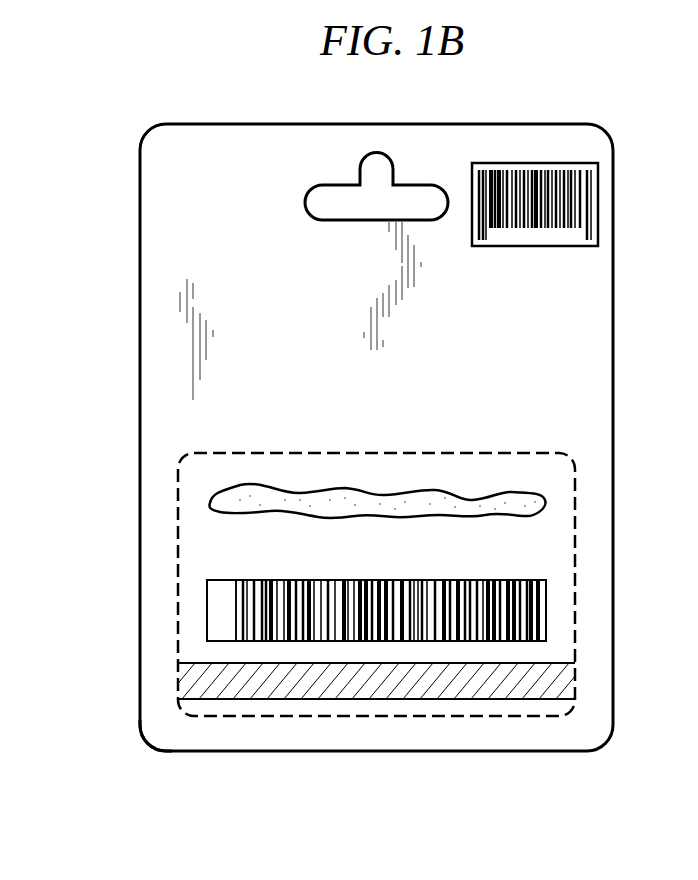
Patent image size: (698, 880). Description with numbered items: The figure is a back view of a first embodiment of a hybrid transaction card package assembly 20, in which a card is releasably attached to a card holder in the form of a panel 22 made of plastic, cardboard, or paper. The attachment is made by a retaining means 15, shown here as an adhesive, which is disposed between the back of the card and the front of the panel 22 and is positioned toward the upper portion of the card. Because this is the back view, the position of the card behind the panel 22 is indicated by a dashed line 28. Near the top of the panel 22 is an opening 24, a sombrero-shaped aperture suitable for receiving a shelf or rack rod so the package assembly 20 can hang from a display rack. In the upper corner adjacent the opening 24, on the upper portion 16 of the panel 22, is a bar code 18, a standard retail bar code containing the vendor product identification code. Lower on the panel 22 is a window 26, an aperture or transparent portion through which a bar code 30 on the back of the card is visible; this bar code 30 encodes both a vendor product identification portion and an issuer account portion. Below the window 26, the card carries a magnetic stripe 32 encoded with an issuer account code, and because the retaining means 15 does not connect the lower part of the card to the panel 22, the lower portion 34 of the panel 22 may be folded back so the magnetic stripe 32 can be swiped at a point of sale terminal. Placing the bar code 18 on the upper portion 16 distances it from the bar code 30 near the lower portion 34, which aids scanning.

The hybrid transaction card package assembly 20 is at (258, 96).
The upper portion of the panel 16 is at (613, 227).
The panel 22 is at (580, 360).
The opening 24 is at (379, 170).
The bar code 18 is at (530, 163).
The dashed line 28 is at (575, 540).
The retaining means 15 is at (447, 492).
The window 26 is at (546, 588).
The bar code 30 is at (237, 590).
The magnetic stripe 32 is at (575, 660).
The lower portion of the panel 34 is at (148, 749).